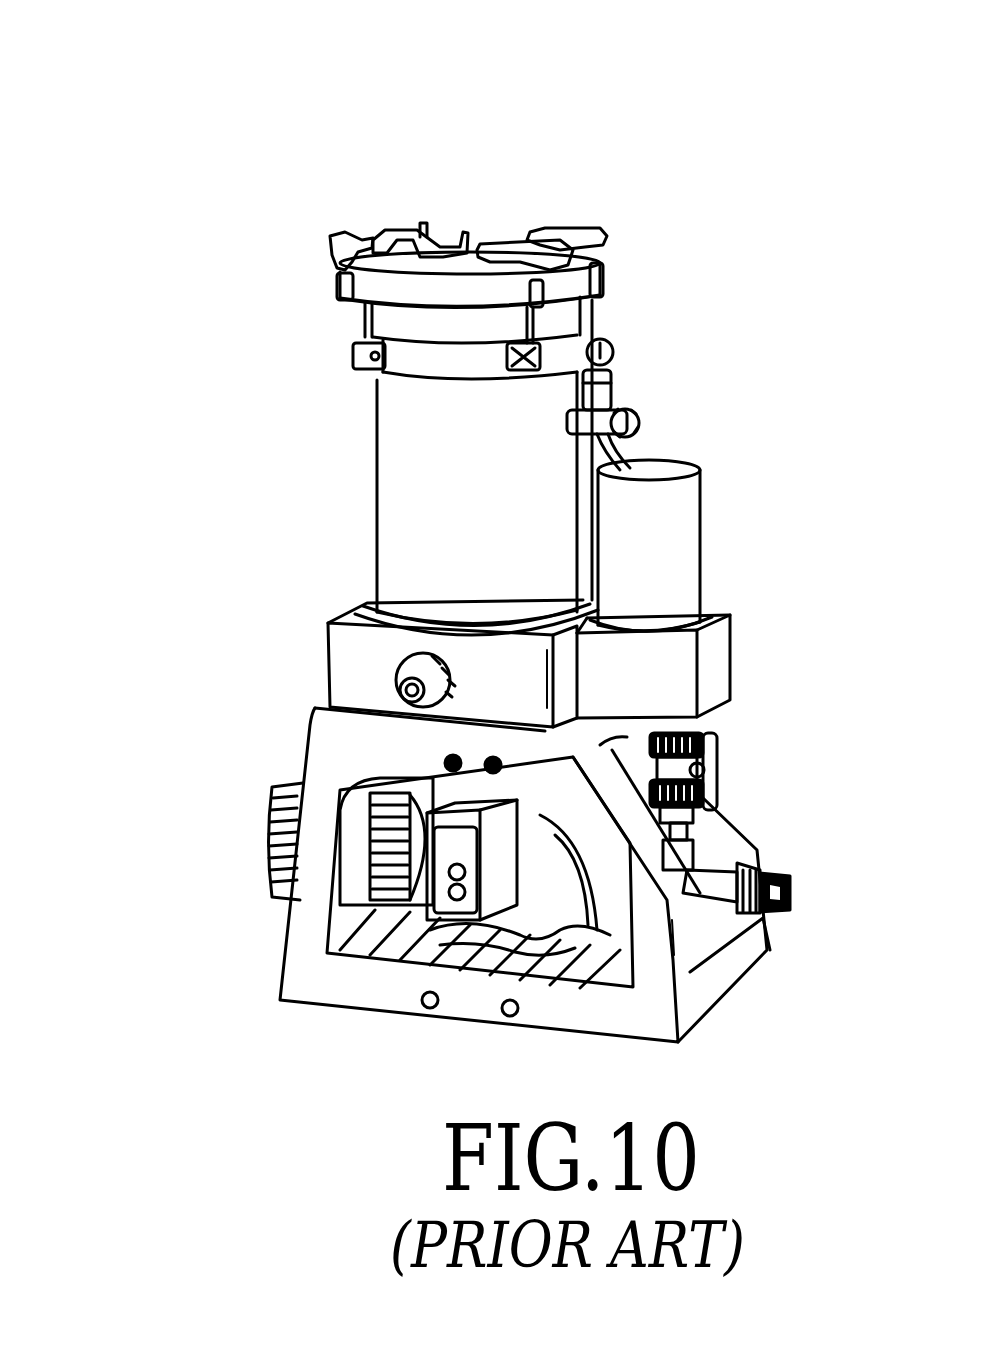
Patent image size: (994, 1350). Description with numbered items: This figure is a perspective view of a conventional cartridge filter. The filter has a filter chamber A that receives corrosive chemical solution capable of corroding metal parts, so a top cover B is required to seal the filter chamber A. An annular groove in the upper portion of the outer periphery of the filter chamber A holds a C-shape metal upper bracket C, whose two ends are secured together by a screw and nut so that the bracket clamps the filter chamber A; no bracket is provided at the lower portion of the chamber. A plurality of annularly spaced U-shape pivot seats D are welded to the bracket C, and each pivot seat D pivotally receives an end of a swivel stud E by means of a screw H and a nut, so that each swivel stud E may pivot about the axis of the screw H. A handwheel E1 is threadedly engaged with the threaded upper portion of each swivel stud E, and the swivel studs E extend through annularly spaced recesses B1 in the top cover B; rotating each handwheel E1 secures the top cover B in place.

The filter chamber A is at (407, 518).
The top cover B is at (460, 268).
The recesses B1 is at (560, 291).
The C-shape metal upper bracket C is at (433, 363).
The U-shape pivot seat D is at (353, 357).
The swivel stud E is at (360, 322).
The handwheel E1 is at (592, 240).
The screw H is at (528, 357).